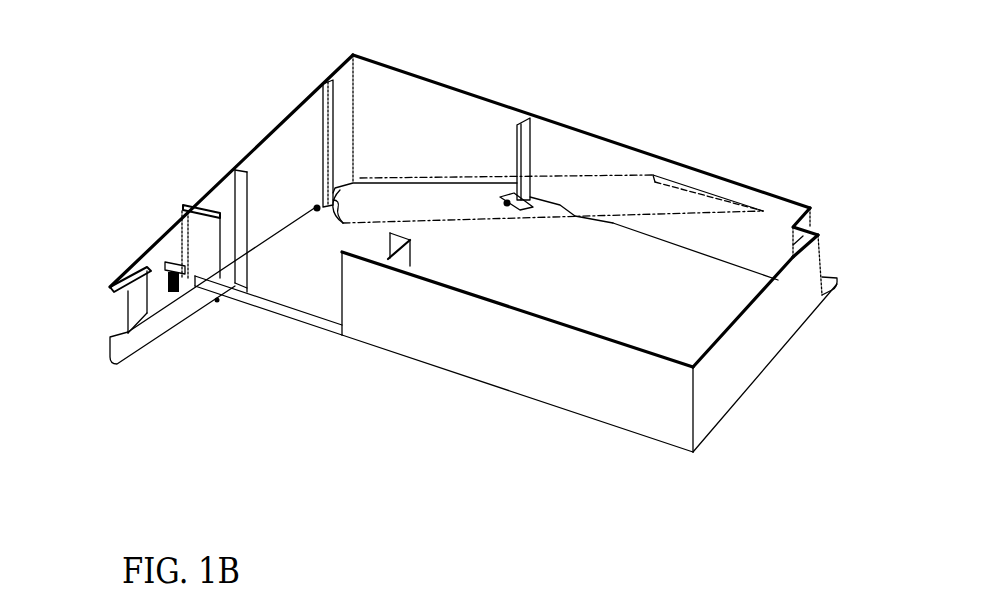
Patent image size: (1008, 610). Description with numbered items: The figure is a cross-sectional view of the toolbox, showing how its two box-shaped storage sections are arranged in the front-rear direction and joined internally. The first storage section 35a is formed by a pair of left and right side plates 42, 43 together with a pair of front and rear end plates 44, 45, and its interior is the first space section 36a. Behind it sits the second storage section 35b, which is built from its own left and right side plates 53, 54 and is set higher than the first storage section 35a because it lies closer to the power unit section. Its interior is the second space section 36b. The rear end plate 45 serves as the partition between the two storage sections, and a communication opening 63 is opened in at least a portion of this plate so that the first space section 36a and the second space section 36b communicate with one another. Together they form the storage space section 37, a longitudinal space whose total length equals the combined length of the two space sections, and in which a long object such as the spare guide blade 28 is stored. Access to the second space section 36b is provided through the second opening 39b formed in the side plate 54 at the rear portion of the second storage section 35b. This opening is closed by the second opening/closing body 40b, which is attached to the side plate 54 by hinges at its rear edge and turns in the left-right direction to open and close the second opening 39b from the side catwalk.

The spare guide blade 28 is at (538, 225).
The first storage section 35a is at (744, 366).
The second storage section 35b is at (243, 164).
The first space section 36a is at (660, 340).
The second space section 36b is at (287, 138).
The storage space section 37 is at (578, 160).
The second opening 39b is at (338, 266).
The second opening/closing body 40b is at (119, 273).
The left side plate 42 is at (630, 147).
The right side plate 43 is at (590, 404).
The front end plate 44 is at (720, 387).
The rear end plate 45 is at (533, 130).
The left side plate 53 is at (471, 91).
The right side plate 54 is at (353, 298).
The communication opening 63 is at (517, 150).